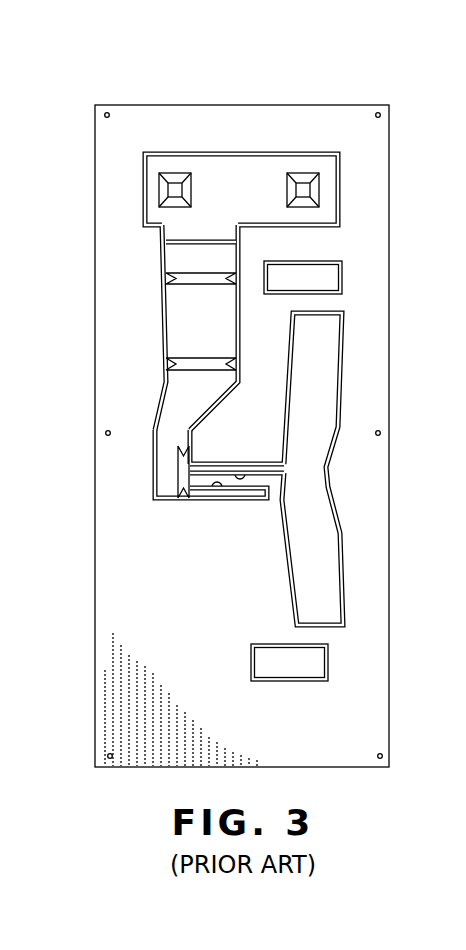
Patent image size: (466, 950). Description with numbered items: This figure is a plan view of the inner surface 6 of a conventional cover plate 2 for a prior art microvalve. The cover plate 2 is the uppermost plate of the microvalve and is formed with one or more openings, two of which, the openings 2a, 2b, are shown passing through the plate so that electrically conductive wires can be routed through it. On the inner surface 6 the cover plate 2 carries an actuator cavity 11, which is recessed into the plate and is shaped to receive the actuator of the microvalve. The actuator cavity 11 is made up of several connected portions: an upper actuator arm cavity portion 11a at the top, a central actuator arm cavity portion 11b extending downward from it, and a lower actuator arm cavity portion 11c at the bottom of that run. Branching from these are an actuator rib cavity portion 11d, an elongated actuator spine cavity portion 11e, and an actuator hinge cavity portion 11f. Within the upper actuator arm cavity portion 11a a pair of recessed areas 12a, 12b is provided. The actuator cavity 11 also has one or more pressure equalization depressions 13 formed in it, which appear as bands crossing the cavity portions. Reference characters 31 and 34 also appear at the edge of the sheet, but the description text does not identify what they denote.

The cover plate 2 is at (183, 104).
The opening 2a is at (320, 293).
The opening 2b is at (303, 677).
The inner surface 6 is at (332, 122).
The actuator cavity 11 is at (241, 341).
The upper actuator arm cavity portion 11a is at (170, 218).
The central actuator arm cavity portion 11b is at (188, 318).
The lower actuator arm cavity portion 11c is at (165, 487).
The actuator rib cavity portion 11d is at (320, 378).
The actuator spine cavity portion 11e is at (245, 472).
The actuator hinge cavity portion 11f is at (213, 500).
The recessed area 12a is at (172, 188).
The recessed area 12b is at (302, 190).
The pressure equalization depression 13 is at (183, 275).
The terminal 31 is at (451, 195).
The terminal 34 is at (452, 475).